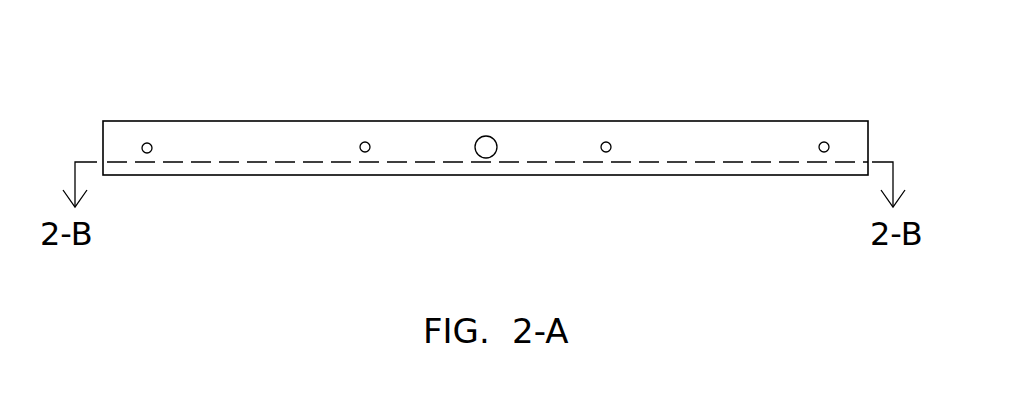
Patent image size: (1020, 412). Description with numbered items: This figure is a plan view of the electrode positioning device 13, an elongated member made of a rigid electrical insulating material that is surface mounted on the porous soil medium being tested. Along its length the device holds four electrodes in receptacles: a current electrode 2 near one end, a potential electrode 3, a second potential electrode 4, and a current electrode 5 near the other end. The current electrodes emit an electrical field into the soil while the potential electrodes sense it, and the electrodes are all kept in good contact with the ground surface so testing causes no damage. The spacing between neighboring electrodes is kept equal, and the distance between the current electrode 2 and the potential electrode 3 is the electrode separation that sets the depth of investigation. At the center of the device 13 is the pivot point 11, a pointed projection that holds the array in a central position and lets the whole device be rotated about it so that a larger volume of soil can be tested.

The current electrode 2 is at (190, 110).
The potential electrode 3 is at (408, 110).
The potential electrode 4 is at (650, 110).
The current electrode 5 is at (792, 110).
The pivot point 11 is at (532, 113).
The electrode positioning device 13 is at (485, 181).